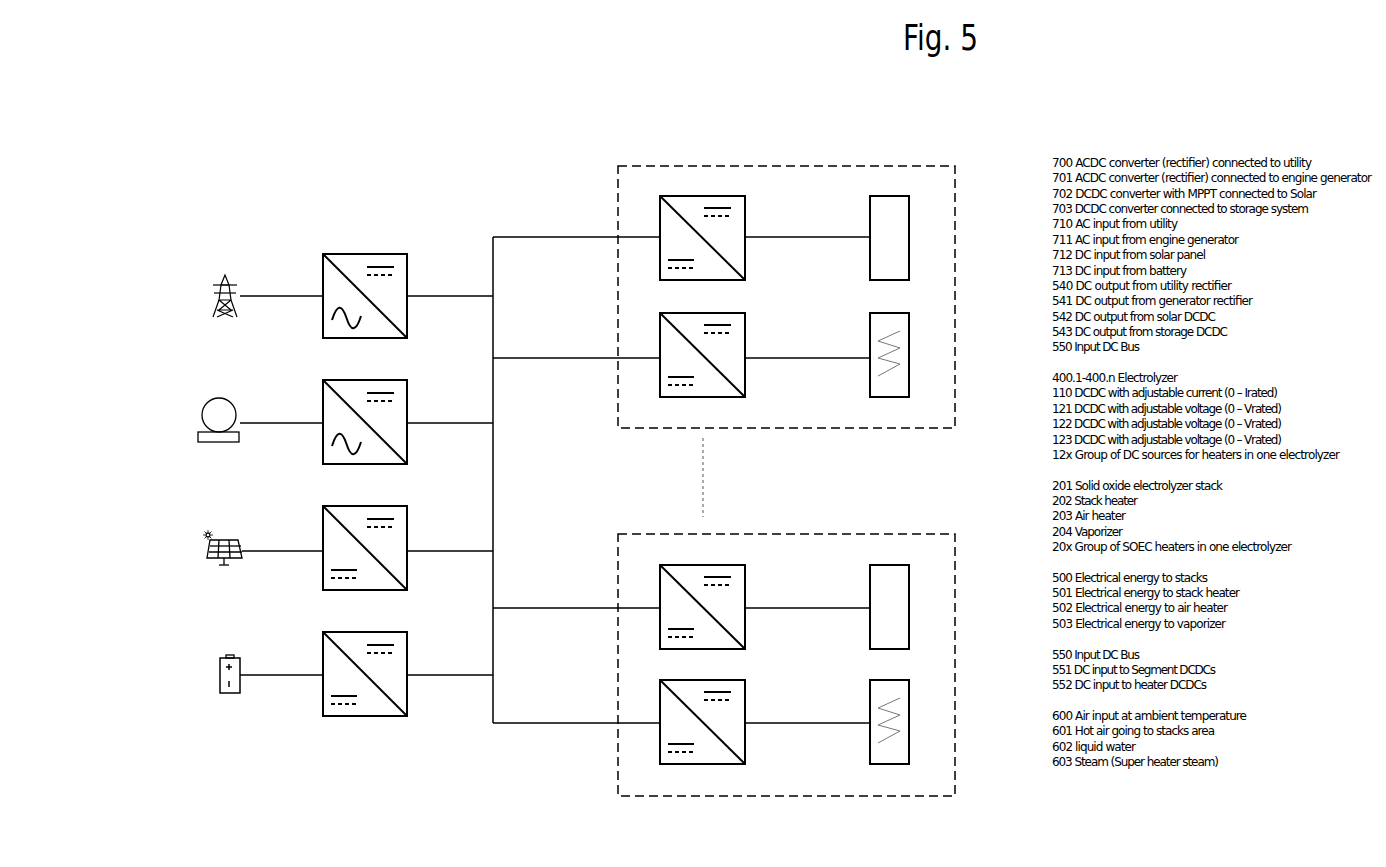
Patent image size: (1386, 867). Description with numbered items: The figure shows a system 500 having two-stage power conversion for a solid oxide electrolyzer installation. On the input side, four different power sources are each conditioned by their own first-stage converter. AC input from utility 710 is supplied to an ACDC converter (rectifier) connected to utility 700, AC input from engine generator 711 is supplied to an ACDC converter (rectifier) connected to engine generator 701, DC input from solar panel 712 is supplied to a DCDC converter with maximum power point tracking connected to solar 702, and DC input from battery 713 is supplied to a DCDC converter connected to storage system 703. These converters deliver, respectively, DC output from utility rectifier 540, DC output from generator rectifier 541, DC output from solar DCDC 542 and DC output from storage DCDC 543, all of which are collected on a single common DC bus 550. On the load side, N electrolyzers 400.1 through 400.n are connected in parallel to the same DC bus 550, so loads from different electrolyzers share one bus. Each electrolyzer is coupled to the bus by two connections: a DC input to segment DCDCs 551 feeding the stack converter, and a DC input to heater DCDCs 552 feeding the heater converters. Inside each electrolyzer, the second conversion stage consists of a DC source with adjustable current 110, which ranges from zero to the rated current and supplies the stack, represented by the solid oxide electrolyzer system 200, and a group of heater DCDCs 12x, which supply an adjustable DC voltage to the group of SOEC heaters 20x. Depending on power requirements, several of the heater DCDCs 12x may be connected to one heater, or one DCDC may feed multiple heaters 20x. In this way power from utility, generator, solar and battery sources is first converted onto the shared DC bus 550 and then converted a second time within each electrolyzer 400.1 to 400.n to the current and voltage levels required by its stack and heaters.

The system having two-stage power conversion 500 is at (968, 97).
The ACDC converter (rectifier) connected to utility 700 is at (365, 287).
The ACDC converter (rectifier) connected to engine generator 701 is at (365, 413).
The DCDC converter with MPPT connected to solar 702 is at (365, 539).
The DCDC converter connected to storage system 703 is at (365, 665).
The AC input from utility 710 is at (281, 289).
The AC input from engine generator 711 is at (281, 412).
The DC input from solar panel 712 is at (282, 542).
The DC input from battery 713 is at (281, 666).
The DC output from utility rectifier 540 is at (450, 287).
The DC output from generator rectifier 541 is at (450, 416).
The DC output from solar DCDC 542 is at (450, 542).
The DC output from storage DCDC 543 is at (450, 665).
The DC bus 550 is at (477, 480).
The DC input to segment DCDCs 551 is at (576, 415).
The DC input to heater DCDCs 552 is at (576, 532).
The electrolyzer 400.1 is at (786, 283).
The electrolyzer 400.n is at (786, 651).
The DC source with adjustable current 110 is at (765, 414).
The DCDCs 12x is at (765, 530).
The system 200 is at (893, 416).
The heaters 20x is at (894, 531).